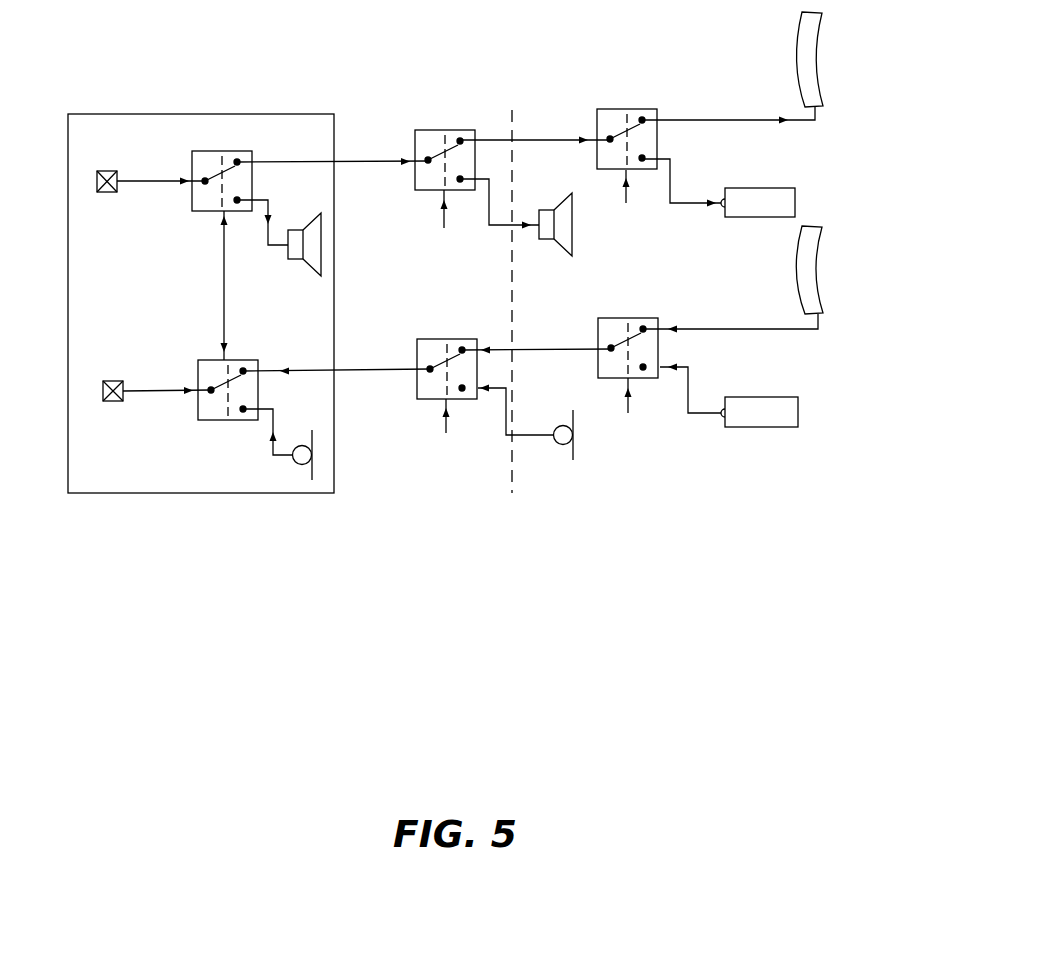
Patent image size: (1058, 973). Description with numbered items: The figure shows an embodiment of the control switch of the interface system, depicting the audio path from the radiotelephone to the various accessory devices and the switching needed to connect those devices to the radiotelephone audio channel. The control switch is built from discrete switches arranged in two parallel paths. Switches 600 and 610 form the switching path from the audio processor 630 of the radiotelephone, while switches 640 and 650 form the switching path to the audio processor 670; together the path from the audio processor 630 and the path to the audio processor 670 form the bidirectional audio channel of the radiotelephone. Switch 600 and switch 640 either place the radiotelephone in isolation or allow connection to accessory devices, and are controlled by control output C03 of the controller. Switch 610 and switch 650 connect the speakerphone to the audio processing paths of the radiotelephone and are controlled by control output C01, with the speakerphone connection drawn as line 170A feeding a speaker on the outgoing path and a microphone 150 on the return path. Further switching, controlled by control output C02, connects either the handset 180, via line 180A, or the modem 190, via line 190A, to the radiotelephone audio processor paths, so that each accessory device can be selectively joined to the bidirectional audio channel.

The switch 600 is at (192, 162).
The switch 610 is at (415, 140).
The audio processor 630 is at (97, 181).
The switch 640 is at (198, 371).
The switch 650 is at (417, 350).
The audio processor 670 is at (103, 391).
The external audio connector (speaker/microphone line) 170A is at (497, 228).
The external microphone 150 is at (557, 444).
The handset 180 is at (797, 43).
The handset connection line 180A is at (763, 122).
The modem 190 is at (742, 218).
The modem connection line 190A is at (678, 205).